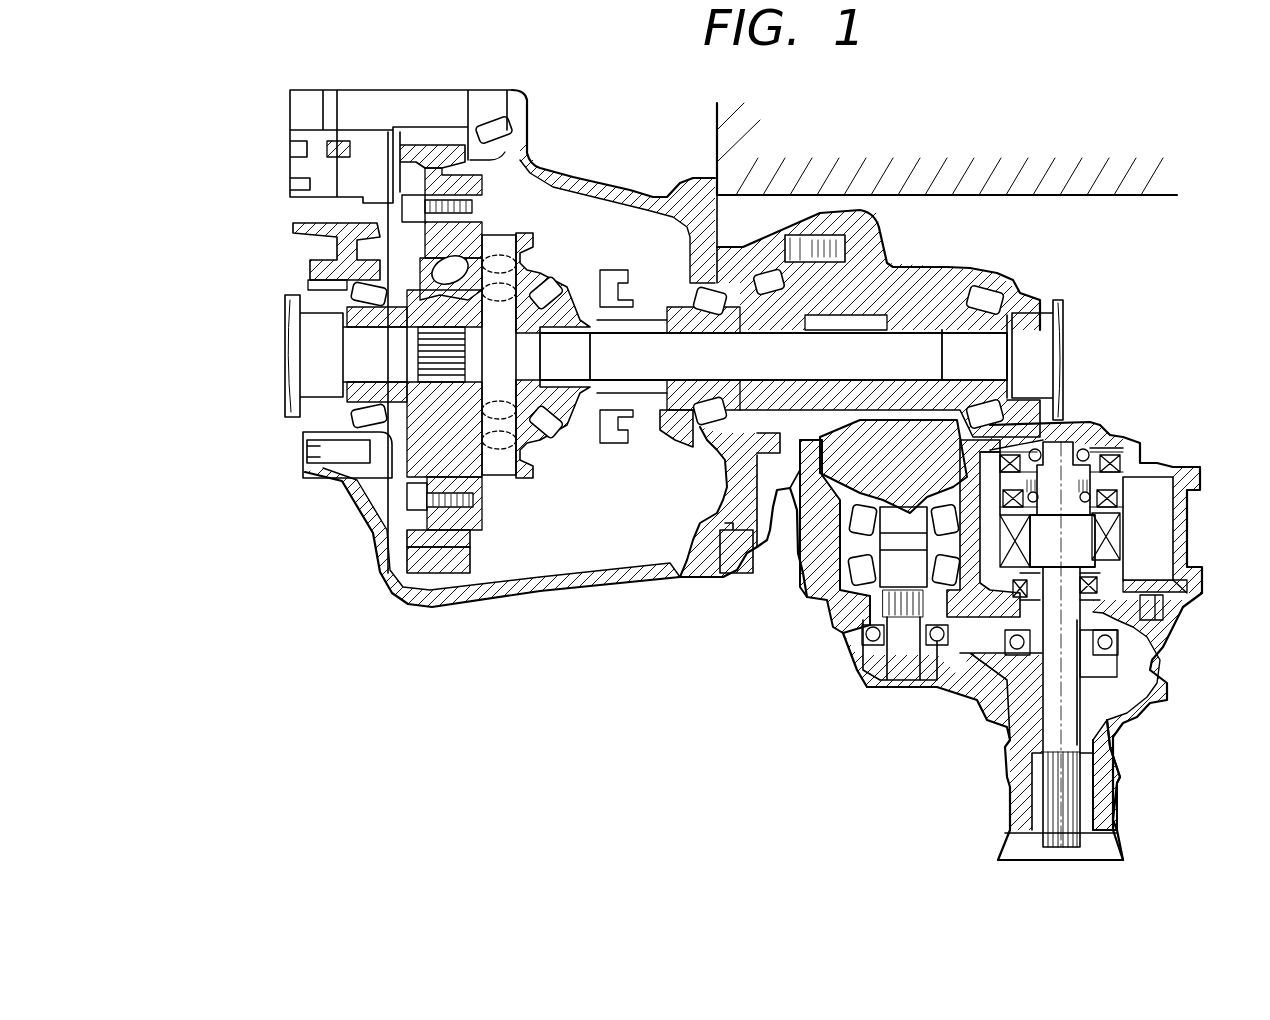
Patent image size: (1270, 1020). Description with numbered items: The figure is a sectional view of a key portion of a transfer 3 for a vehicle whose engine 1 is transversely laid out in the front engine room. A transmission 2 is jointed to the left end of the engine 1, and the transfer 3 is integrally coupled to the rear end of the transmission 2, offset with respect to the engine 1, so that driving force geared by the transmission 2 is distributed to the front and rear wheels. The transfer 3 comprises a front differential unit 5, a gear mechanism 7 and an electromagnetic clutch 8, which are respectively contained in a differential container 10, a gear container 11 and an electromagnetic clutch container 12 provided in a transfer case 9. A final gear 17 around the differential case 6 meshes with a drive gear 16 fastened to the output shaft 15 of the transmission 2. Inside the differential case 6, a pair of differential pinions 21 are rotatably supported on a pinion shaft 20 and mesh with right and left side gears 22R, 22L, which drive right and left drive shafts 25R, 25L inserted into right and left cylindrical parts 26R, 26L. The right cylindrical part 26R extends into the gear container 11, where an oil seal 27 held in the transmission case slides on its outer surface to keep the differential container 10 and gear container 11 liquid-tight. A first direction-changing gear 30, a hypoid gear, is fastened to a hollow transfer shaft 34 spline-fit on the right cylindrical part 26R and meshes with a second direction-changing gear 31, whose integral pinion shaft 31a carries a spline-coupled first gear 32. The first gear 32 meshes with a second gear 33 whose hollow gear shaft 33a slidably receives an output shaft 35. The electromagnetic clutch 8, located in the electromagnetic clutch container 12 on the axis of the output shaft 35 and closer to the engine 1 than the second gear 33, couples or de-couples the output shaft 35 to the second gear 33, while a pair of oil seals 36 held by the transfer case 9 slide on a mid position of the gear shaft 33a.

The engine 1 is at (1085, 199).
The transmission 2 is at (272, 160).
The transfer 3 is at (775, 692).
The front differential unit 5 is at (503, 490).
The differential case 6 is at (570, 443).
The gear mechanism 7 is at (785, 465).
The electromagnetic clutch 8 is at (1140, 546).
The transfer case 9 is at (773, 545).
The differential container 10 is at (616, 548).
The gear container 11 is at (1072, 428).
The electromagnetic clutch container 12 is at (1155, 472).
The output shaft 15 is at (360, 98).
The drive gear 16 is at (489, 118).
The final gear 17 is at (430, 556).
The pinion shaft 20 is at (498, 245).
The differential pinions 21 is at (538, 250).
The left side gear 22L is at (345, 292).
The right side gear 22R is at (552, 288).
The left drive shaft 25L is at (292, 320).
The right drive shaft 25R is at (1046, 330).
The left cylindrical part 26L is at (372, 412).
The right cylindrical part 26R is at (668, 418).
The oil seal 27 is at (935, 308).
The first direction-changing gear 30 is at (868, 238).
The second direction-changing gear 31 is at (935, 430).
The pinion shaft 31a is at (897, 690).
The first gear 32 is at (853, 640).
The second gear 33 is at (990, 690).
The gear shaft 33a is at (1160, 652).
The transfer shaft 34 is at (987, 290).
The output shaft 35 is at (1070, 720).
The oil seals 36 is at (1177, 607).